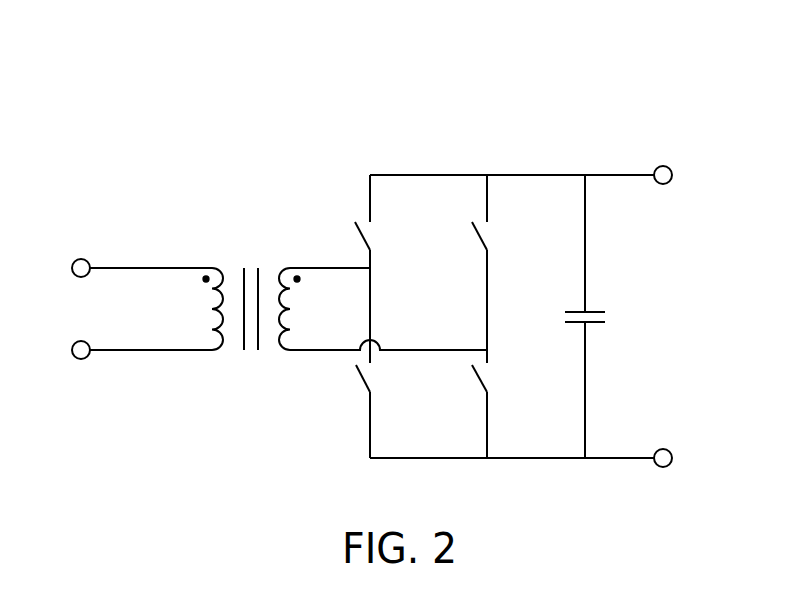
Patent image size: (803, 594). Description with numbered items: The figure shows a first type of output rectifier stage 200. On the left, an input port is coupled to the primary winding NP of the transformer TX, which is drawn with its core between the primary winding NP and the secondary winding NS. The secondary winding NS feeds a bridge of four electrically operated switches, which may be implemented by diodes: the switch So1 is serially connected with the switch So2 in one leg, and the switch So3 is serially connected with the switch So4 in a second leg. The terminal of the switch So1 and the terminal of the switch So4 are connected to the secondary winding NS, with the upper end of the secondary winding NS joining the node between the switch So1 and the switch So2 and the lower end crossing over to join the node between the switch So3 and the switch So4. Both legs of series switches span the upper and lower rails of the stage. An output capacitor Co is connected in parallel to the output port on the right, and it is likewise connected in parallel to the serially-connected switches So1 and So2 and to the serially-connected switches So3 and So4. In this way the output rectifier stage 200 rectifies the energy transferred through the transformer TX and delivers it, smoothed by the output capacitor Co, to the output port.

The output rectifier stage 200 is at (383, 239).
The transformer TX is at (335, 294).
The primary winding NP is at (203, 309).
The secondary winding NS is at (383, 309).
The switch So1 is at (348, 234).
The switch So2 is at (346, 377).
The switch So3 is at (464, 234).
The switch So4 is at (463, 377).
The output capacitor Co is at (569, 308).